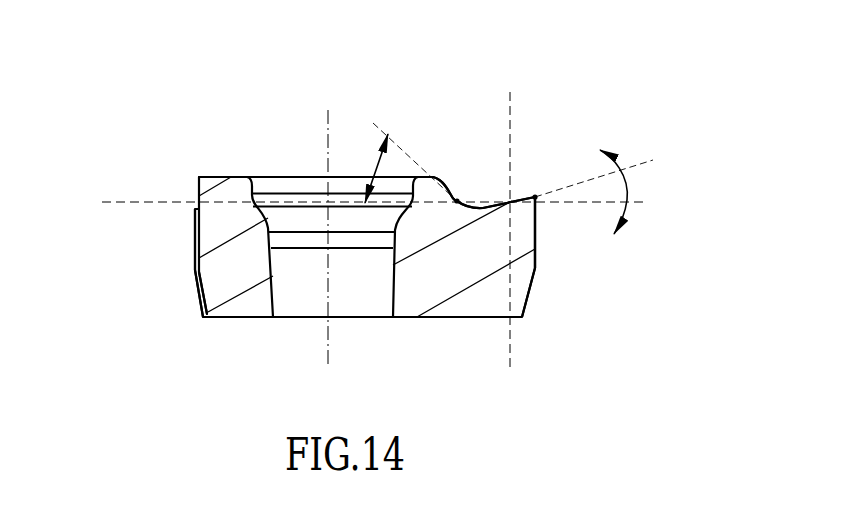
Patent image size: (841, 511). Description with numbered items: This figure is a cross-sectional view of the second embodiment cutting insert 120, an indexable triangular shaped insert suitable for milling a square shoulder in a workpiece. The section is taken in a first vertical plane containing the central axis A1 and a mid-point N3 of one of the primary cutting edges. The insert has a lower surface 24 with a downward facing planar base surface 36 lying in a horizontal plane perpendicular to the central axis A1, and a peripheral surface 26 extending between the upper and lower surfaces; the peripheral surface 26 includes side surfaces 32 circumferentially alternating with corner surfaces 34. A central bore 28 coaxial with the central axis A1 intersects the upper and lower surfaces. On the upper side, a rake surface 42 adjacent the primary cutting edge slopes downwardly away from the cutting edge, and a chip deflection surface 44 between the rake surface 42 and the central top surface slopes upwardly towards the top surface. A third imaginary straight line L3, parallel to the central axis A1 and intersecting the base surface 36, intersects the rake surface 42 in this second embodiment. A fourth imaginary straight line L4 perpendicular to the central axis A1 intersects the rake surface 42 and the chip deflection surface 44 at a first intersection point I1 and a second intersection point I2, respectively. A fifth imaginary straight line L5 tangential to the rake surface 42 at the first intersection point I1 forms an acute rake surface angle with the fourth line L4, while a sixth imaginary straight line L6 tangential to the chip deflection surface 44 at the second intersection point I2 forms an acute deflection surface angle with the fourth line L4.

The second embodiment cutting insert 120 is at (186, 151).
The peripheral surface 26 is at (193, 230).
The side surface 32 is at (192, 254).
The lower surface 24 is at (245, 319).
The central bore 28 is at (299, 290).
The base surface 36 is at (477, 318).
The corner surface 34 is at (539, 239).
The chip deflection surface 44 is at (453, 200).
The rake surface 42 is at (498, 204).
The first intersection point I1 is at (535, 196).
The second intersection point I2 is at (457, 200).
The mid-point of primary cutting edge N3 is at (535, 197).
The third imaginary straight line L3 is at (513, 234).
The fourth imaginary straight line L4 is at (376, 204).
The fifth imaginary straight line L5 is at (609, 170).
The sixth imaginary straight line L6 is at (402, 150).
The central axis A1 is at (327, 239).